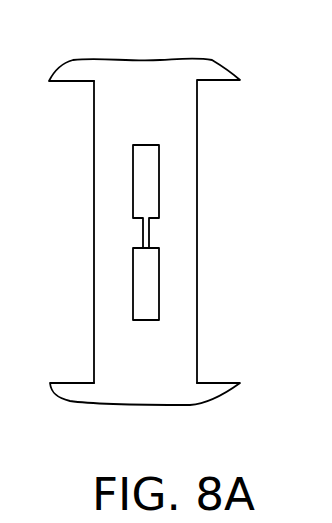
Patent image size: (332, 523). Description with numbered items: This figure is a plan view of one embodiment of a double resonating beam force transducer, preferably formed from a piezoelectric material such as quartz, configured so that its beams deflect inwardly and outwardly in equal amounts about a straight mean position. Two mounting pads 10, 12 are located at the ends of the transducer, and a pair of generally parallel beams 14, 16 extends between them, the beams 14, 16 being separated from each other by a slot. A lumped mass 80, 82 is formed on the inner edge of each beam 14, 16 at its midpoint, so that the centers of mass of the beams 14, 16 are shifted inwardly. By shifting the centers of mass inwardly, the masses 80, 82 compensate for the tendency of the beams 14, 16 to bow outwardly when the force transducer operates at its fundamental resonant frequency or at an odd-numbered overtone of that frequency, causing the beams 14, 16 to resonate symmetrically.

The mounting pad 10 is at (207, 394).
The mounting pad 12 is at (207, 75).
The beam 14 is at (100, 230).
The beam 16 is at (187, 229).
The lumped mass 80 is at (135, 230).
The lumped mass 82 is at (158, 232).